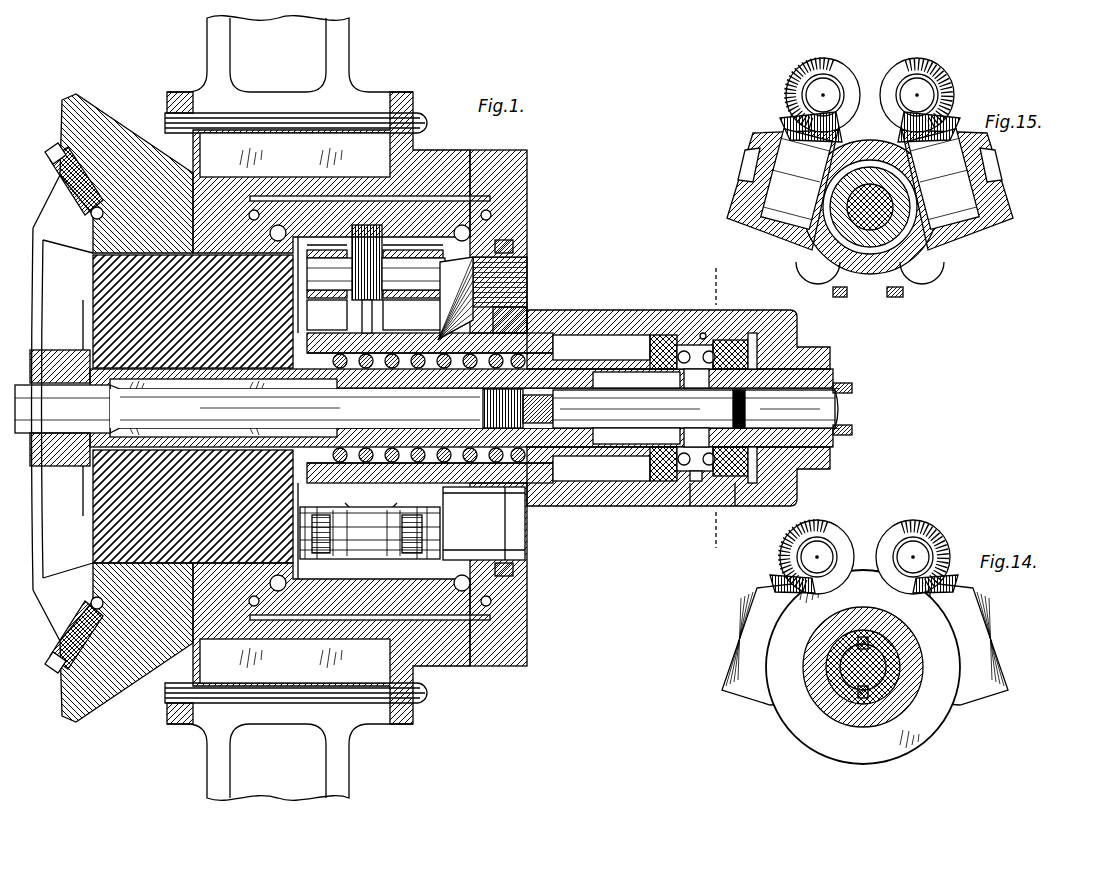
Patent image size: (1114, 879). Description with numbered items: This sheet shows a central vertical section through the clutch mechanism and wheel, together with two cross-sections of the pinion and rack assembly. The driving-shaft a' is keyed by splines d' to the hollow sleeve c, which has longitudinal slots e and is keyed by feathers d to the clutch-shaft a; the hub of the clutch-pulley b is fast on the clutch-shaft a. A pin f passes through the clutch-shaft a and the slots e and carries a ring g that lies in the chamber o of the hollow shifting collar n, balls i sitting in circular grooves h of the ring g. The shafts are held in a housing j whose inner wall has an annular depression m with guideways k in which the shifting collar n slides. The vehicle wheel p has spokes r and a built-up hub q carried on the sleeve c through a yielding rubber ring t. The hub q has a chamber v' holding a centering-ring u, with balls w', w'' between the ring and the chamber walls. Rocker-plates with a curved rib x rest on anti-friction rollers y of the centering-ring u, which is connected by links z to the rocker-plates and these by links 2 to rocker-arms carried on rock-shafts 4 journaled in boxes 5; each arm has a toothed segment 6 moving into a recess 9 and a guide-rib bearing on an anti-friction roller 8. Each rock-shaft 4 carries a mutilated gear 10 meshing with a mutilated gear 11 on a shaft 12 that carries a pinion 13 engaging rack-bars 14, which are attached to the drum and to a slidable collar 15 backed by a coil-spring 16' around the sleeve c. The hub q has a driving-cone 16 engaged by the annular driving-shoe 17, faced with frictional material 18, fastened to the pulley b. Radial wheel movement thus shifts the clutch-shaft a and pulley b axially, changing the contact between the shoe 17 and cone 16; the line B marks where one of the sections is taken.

In FIG. 1, the spokes r is at (362, 752).
In FIG. 1, the vehicle wheel p is at (463, 134).
In FIG. 1, the centering-ring u is at (285, 228).
In FIG. 1, the built-up hub q is at (515, 153).
In FIG. 1, the balls w' is at (404, 374).
In FIG. 1, the balls w'' is at (427, 376).
In FIG. 1, the anti-friction roller 8 is at (345, 250).
In FIG. 1, the boxes 5 is at (330, 250).
In FIG. 1, the toothed segment 6 is at (370, 238).
In FIG. 1, the rock-shafts 4 is at (556, 258).
In FIG. 15, the rock-shafts 4 is at (815, 88).
In FIG. 14, the rock-shafts 4 is at (912, 552).
In FIG. 1, the links 2 is at (413, 274).
In FIG. 1, the links z is at (455, 502).
In FIG. 1, the recess 9 is at (360, 333).
In FIG. 1, the mutilated gear 10 is at (498, 298).
In FIG. 15, the mutilated gear 10 is at (917, 92).
In FIG. 14, the mutilated gear 10 is at (915, 555).
In FIG. 1, the mutilated gear 11 is at (512, 318).
In FIG. 15, the mutilated gear 11 is at (870, 127).
In FIG. 14, the mutilated gear 11 is at (793, 582).
In FIG. 1, the slidable collar 15 is at (520, 485).
In FIG. 1, the ring of rubber t is at (100, 260).
In FIG. 1, the sleeve c is at (367, 428).
In FIG. 15, the sleeve c is at (858, 182).
In FIG. 14, the sleeve c is at (896, 650).
In FIG. 1, the clutch-shaft a is at (420, 409).
In FIG. 1, the shaft 12 is at (483, 408).
In FIG. 15, the shaft 12 is at (803, 143).
In FIG. 14, the shaft 12 is at (948, 590).
In FIG. 1, the pinion 13 is at (553, 408).
In FIG. 15, the pinion 13 is at (760, 155).
In FIG. 1, the rack-bars 14 is at (600, 405).
In FIG. 15, the rack-bars 14 is at (813, 187).
In FIG. 1, the driving-shaft a' is at (812, 409).
In FIG. 15, the driving-shaft a' is at (862, 250).
In FIG. 14, the driving-shaft a' is at (896, 667).
In FIG. 1, the splines d' is at (874, 407).
In FIG. 14, the splines d' is at (864, 669).
In FIG. 1, the housing j is at (797, 322).
In FIG. 15, the housing j is at (730, 198).
In FIG. 14, the housing j is at (745, 758).
In FIG. 1, the annular depression m is at (590, 335).
In FIG. 1, the guideways k is at (612, 338).
In FIG. 1, the longitudinal slots e is at (630, 373).
In FIG. 1, the pin f is at (690, 345).
In FIG. 1, the chamber o is at (703, 333).
In FIG. 1, the ring g is at (730, 343).
In FIG. 1, the shifting collar n is at (752, 333).
In FIG. 15, the shifting collar n is at (833, 233).
In FIG. 1, the section line B— B is at (708, 404).
In FIG. 1, the balls i is at (690, 500).
In FIG. 1, the circular groove h is at (694, 481).
In FIG. 1, the feathers d is at (75, 402).
In FIG. 1, the clutch-pulley b is at (50, 517).
In FIG. 1, the driving-cone 16 is at (126, 403).
In FIG. 1, the annular driving-shoe 17 is at (83, 161).
In FIG. 1, the frictional material 18 is at (62, 112).
In FIG. 1, the chamber v' is at (482, 414).
In FIG. 1, the curved rib x is at (371, 499).
In FIG. 1, the anti-friction rollers y is at (370, 539).
In FIG. 1, the coil-spring 16' is at (484, 523).